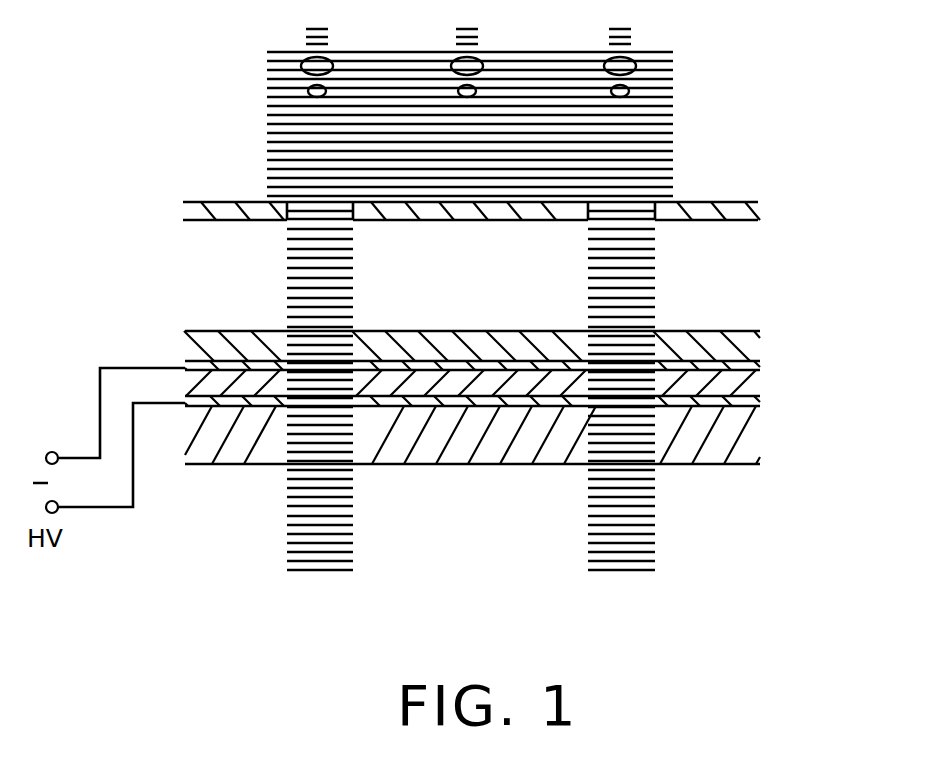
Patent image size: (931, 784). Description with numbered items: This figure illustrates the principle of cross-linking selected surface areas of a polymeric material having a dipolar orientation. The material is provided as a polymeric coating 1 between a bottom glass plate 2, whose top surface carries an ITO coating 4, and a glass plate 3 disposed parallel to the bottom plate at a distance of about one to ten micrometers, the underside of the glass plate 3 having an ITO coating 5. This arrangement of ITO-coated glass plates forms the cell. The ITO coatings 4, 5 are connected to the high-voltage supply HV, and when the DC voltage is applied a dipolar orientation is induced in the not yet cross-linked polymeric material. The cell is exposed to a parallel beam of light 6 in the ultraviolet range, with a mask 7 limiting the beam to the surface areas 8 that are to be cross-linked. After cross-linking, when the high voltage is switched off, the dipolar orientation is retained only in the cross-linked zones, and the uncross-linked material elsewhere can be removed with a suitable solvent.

The polymeric coating 1 is at (750, 384).
The bottom glass plate 2 is at (750, 453).
The glass plate 3 is at (705, 337).
The ITO coating 4 is at (757, 397).
The ITO coating 5 is at (755, 360).
The parallel beam of light 6 is at (652, 120).
The mask 7 is at (728, 205).
The surface areas 8 is at (597, 382).